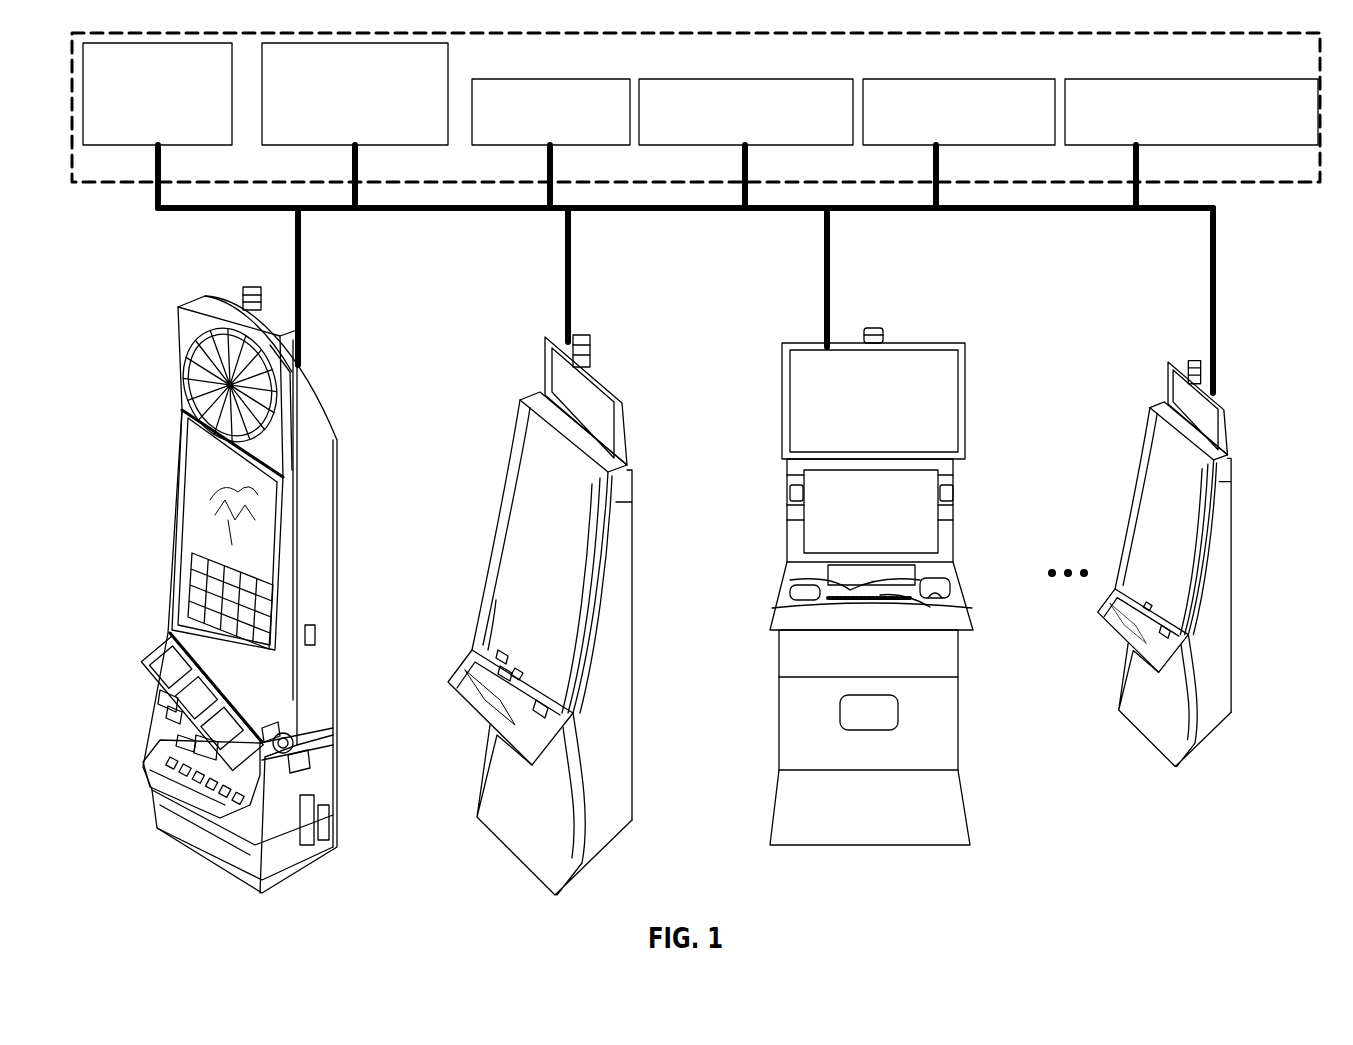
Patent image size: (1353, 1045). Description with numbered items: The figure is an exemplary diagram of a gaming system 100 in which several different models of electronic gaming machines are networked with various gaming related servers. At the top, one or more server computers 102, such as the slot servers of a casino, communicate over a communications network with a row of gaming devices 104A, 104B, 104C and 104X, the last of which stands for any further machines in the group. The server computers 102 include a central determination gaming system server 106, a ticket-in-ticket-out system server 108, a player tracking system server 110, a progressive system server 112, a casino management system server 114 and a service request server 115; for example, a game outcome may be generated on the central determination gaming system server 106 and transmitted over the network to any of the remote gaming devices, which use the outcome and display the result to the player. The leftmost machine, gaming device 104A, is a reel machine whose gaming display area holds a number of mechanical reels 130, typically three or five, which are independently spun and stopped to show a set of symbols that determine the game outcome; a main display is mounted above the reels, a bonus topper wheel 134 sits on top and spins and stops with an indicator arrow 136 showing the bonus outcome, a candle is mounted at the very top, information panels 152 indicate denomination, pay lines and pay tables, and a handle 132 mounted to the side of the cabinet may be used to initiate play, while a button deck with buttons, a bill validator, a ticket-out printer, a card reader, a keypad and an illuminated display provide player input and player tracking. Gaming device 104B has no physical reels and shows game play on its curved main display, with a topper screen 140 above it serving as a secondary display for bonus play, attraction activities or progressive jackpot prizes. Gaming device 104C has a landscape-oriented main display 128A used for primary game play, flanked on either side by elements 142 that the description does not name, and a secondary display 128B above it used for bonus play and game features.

The system 100 is at (1262, 296).
The server computers 102 is at (1212, 184).
The gaming device 104A is at (133, 335).
The gaming device 104B is at (492, 390).
The gaming device 104C is at (768, 303).
The gaming device 104X is at (1140, 357).
The central determination gaming system server 106 is at (405, 146).
The ticket-in-ticket-out (TITO) system server 108 is at (587, 146).
The player tracking system server 110 is at (785, 146).
The progressive system server 112 is at (1013, 146).
The casino management system server 114 is at (1230, 146).
The service request server 115 is at (183, 146).
The main display 128A is at (955, 505).
The secondary display 128B is at (965, 418).
The mechanical reels 130 is at (175, 633).
The handle 132 is at (265, 727).
The bonus topper wheel 134 is at (292, 405).
The indicator arrow 136 is at (228, 322).
The topper screen 140 is at (630, 412).
The speakers 142 is at (788, 490).
The information panels 152 is at (165, 692).